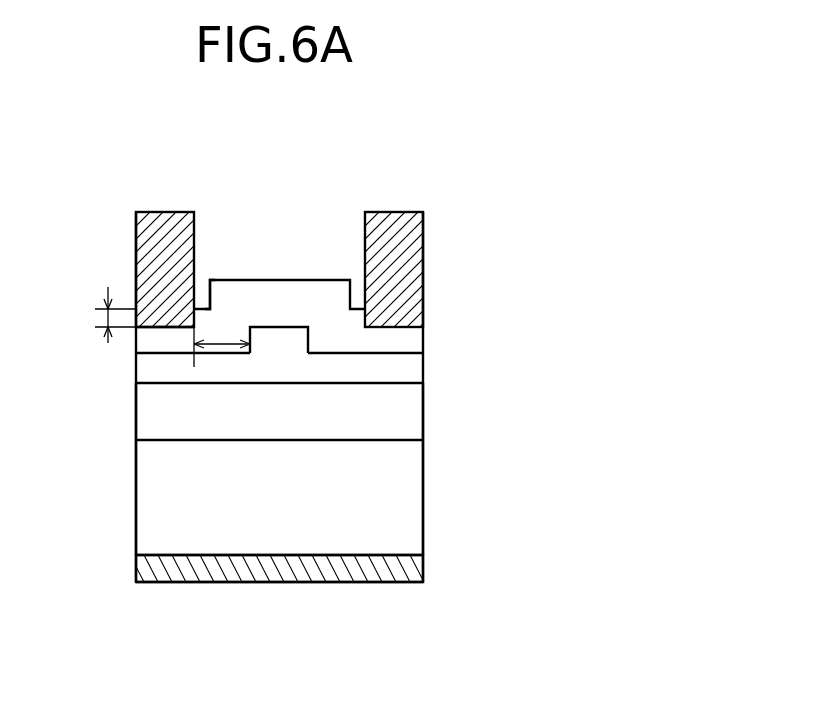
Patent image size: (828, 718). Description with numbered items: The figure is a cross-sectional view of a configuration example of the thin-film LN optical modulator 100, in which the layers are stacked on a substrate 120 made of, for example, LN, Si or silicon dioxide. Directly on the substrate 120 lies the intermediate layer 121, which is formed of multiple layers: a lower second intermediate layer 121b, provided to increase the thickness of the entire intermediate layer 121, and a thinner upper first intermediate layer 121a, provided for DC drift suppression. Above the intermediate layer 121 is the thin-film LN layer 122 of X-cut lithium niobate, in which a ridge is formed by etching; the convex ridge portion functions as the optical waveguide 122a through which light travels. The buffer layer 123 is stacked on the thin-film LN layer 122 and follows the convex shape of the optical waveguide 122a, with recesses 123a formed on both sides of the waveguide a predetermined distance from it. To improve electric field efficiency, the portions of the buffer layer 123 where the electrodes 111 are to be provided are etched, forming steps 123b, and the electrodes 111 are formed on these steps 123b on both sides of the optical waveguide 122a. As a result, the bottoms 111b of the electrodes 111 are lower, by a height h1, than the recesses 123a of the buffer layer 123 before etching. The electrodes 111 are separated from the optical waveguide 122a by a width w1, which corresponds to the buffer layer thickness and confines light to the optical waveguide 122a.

The thin-film LN optical modulator 100 is at (410, 160).
The electrode 111 is at (143, 252).
The buffer layer 123 is at (413, 340).
The recess 123a is at (203, 303).
The thin-film LN layer 122 is at (413, 369).
The optical waveguide 122a is at (277, 343).
The bottom of the electrode 111b is at (166, 327).
The step 123b is at (122, 393).
The height h1 is at (97, 315).
The width w1 is at (222, 339).
The first intermediate layer 121a is at (245, 418).
The second intermediate layer 121b is at (333, 500).
The intermediate layer 121 is at (368, 627).
The substrate 120 is at (418, 570).